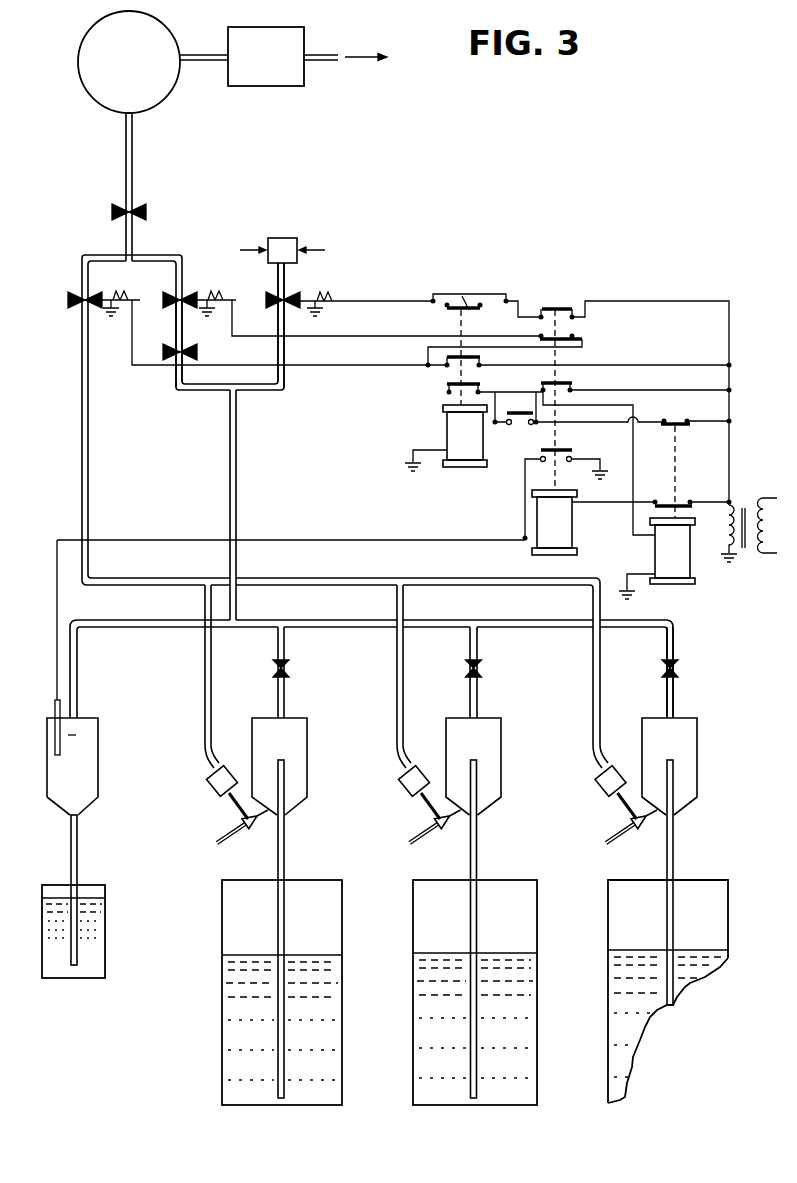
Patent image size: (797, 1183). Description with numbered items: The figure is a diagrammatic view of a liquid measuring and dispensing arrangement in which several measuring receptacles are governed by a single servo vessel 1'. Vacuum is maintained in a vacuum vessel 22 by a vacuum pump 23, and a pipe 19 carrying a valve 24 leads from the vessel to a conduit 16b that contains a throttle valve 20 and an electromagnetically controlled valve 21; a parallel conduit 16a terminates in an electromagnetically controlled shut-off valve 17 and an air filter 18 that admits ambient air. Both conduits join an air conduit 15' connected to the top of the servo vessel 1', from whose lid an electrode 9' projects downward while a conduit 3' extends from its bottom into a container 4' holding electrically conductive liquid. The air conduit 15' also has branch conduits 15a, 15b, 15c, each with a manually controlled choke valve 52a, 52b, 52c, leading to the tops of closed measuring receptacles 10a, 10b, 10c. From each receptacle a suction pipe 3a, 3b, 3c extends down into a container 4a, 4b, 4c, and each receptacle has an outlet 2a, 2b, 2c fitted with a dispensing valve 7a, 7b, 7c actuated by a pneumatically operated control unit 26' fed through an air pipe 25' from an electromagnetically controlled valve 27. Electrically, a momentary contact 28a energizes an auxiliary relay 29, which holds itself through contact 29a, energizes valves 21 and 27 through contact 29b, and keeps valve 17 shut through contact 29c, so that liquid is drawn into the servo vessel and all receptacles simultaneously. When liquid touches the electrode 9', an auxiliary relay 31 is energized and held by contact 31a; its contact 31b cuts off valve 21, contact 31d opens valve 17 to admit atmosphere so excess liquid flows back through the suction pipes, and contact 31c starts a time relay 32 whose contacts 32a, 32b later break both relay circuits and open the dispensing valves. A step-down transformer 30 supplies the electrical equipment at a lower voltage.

The vacuum vessel 22 is at (83, 97).
The vacuum pump 23 is at (252, 87).
The pipe 19 is at (136, 170).
The valve 24 is at (147, 212).
The electromagnetically controlled valve 27 is at (72, 297).
The electromagnetically controlled valve 21 is at (188, 297).
The electromagnetically controlled shut-off valve 17 is at (289, 296).
The throttle valve 20 is at (172, 345).
The air filter 18 is at (281, 238).
The conduit 16a is at (247, 392).
The conduit 16b is at (196, 392).
The air conduit 15' is at (371, 554).
The air pipe 25' is at (321, 534).
The auxiliary relay 29 is at (455, 439).
The contact 29a is at (449, 392).
The contact 29b is at (470, 368).
The contact 29c is at (468, 296).
The auxiliary relay 31 is at (558, 523).
The contact 31a is at (556, 452).
The contact 31b is at (568, 338).
The contact 31c is at (565, 384).
The contact 31d is at (560, 306).
The contact 28a is at (520, 434).
The time relay 32 is at (683, 565).
The contact 32a is at (680, 428).
The contact 32b is at (677, 498).
The step-down transformer 30 is at (745, 500).
The servo vessel 1' is at (88, 766).
The electrode 9' is at (37, 727).
The conduit 3' is at (62, 890).
The container 4' is at (58, 931).
The measuring receptacle 10a is at (307, 752).
The measuring receptacle 10b is at (501, 752).
The measuring receptacle 10c is at (697, 752).
The pneumatically operated control unit 26' is at (402, 790).
The dispensing valve 7a is at (238, 824).
The dispensing valve 7b is at (431, 826).
The dispensing valve 7c is at (627, 826).
The outlet 2a is at (266, 825).
The outlet 2b is at (458, 825).
The outlet 2c is at (655, 825).
The suction pipe 3a is at (286, 853).
The suction pipe 3b is at (478, 857).
The suction pipe 3c is at (674, 857).
The container 4a is at (222, 980).
The container 4b is at (413, 985).
The container 4c is at (608, 985).
The choke valve 52a is at (290, 665).
The choke valve 52b is at (482, 665).
The choke valve 52c is at (679, 663).
The branch conduit 15a is at (284, 698).
The branch conduit 15b is at (477, 698).
The branch conduit 15c is at (674, 698).